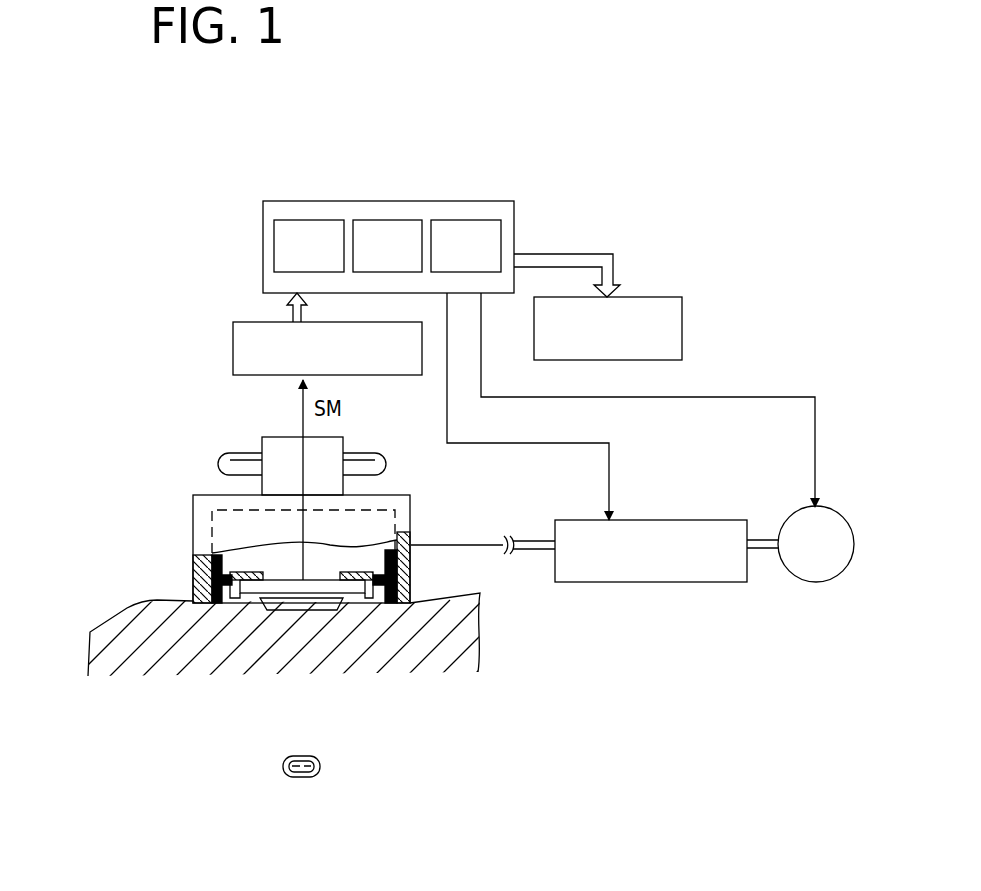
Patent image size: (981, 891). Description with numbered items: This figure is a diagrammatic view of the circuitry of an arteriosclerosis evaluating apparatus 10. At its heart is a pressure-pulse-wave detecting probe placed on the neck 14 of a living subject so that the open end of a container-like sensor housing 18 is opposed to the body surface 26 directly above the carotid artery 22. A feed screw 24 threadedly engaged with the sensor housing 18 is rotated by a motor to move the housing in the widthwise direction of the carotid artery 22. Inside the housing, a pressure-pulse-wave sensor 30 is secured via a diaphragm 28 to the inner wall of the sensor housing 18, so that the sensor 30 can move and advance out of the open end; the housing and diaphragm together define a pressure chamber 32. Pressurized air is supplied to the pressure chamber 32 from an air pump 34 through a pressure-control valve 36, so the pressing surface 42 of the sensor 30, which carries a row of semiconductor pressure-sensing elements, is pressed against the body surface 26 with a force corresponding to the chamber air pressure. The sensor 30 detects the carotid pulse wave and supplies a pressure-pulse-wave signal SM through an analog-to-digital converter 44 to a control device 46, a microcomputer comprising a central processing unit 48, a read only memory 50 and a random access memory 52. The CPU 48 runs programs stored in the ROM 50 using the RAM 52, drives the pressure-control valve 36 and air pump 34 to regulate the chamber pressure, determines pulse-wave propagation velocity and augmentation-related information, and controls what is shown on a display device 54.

The arteriosclerosis evaluating apparatus 10 is at (485, 122).
The neck 14 is at (80, 640).
The sensor housing 18 is at (198, 580).
The carotid artery 22 is at (303, 778).
The feed screw 24 is at (368, 462).
The body surface 26 is at (125, 610).
The diaphragm 28 is at (213, 603).
The pressure-pulse-wave sensor 30 is at (262, 612).
The pressure chamber 32 is at (334, 566).
The air pump 34 is at (817, 575).
The pressure-control valve 36 is at (725, 577).
The pressing surface 42 is at (327, 610).
The analog-to-digital converter 44 is at (242, 355).
The control device 46 is at (247, 252).
The central processing unit 48 is at (280, 238).
The read only memory 50 is at (397, 227).
The random access memory 52 is at (495, 225).
The display device 54 is at (678, 325).